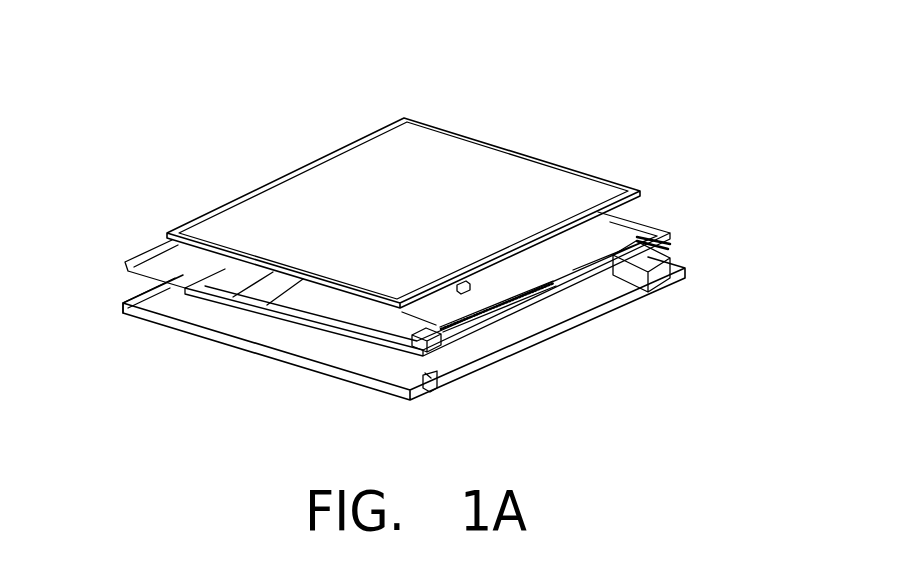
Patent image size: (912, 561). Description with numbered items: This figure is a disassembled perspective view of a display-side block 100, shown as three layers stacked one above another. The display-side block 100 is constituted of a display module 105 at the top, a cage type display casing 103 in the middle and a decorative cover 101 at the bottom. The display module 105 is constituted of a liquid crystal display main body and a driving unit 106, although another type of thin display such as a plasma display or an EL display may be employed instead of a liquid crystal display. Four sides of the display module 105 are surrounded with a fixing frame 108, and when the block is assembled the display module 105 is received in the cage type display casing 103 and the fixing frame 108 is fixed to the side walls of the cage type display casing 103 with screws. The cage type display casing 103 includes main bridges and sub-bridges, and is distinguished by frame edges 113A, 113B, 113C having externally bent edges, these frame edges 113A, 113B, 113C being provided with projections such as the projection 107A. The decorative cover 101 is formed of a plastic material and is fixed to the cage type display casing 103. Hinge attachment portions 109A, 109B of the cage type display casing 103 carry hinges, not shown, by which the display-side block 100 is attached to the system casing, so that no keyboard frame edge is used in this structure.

The display-side block 100 is at (470, 98).
The decorative cover 101 is at (512, 342).
The cage type display casing 103 is at (404, 324).
The display module 105 is at (430, 205).
The driving unit 106 is at (633, 212).
The projection 107A is at (212, 328).
The fixing frame 108 is at (290, 172).
The hinge attachment portion 109A is at (440, 343).
The hinge attachment portion 109B is at (673, 255).
The frame edge 113A is at (303, 327).
The frame edge 113B is at (160, 256).
The frame edge 113C is at (643, 227).